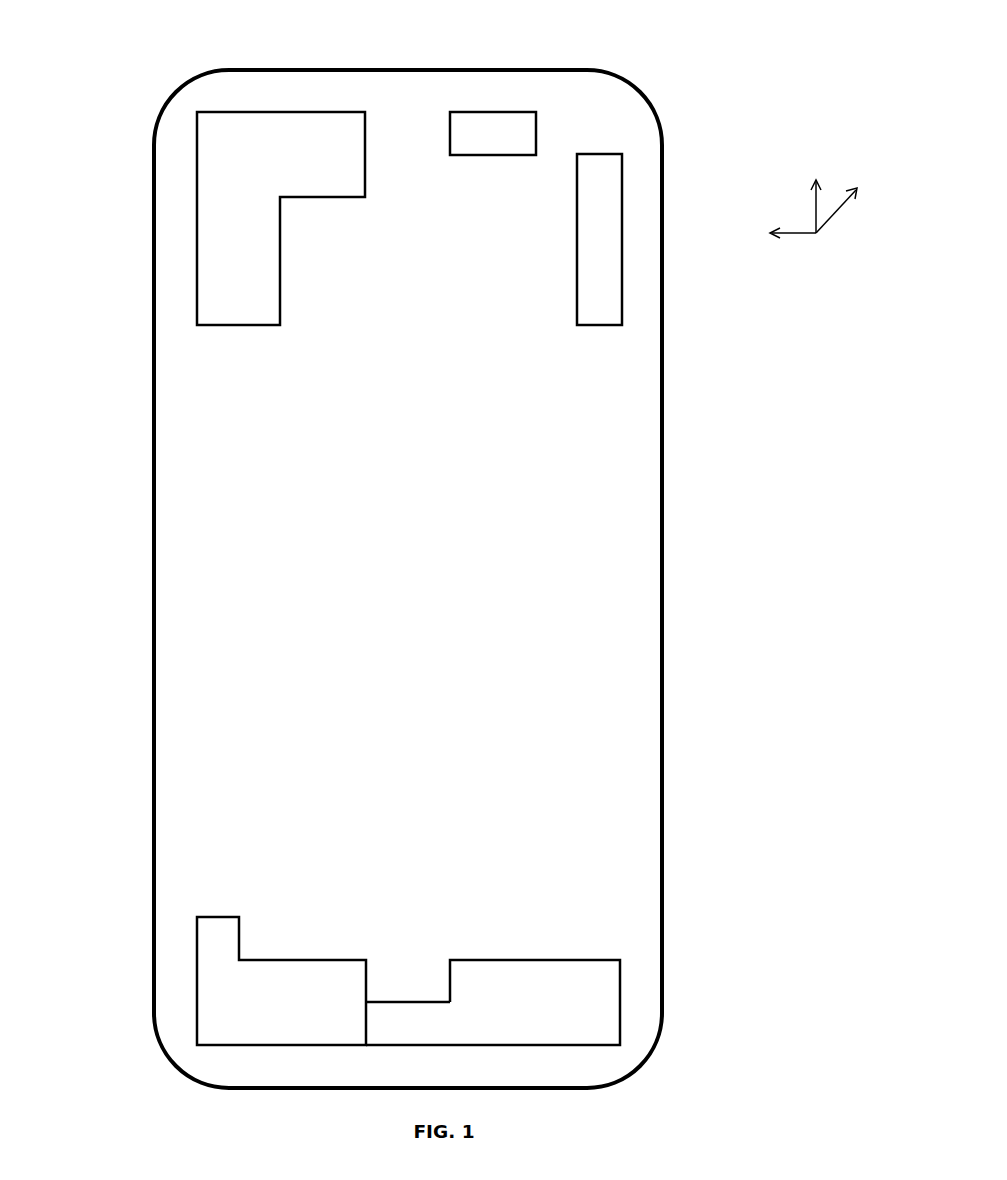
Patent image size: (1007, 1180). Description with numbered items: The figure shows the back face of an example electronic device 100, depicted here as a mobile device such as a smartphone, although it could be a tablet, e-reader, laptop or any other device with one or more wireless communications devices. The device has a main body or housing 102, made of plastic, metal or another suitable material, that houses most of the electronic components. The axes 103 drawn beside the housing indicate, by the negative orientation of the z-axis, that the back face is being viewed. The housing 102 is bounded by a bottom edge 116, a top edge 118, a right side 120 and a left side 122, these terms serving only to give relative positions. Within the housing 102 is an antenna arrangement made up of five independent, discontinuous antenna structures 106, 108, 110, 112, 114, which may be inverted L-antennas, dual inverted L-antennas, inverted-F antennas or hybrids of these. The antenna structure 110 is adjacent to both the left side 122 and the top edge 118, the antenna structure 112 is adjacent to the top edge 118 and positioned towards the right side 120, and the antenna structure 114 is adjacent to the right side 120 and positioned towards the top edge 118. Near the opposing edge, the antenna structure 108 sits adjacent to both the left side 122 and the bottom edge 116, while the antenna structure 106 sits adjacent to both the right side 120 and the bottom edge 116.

The electronic device 100 is at (493, 581).
The housing 102 is at (662, 440).
The axes 103 is at (833, 160).
The antenna structure 106 is at (620, 1003).
The antenna structure 108 is at (197, 1012).
The antenna structure 110 is at (192, 200).
The antenna structure 112 is at (515, 112).
The antenna structure 114 is at (620, 190).
The bottom edge 116 is at (573, 1090).
The top edge 118 is at (217, 70).
The right side 120 is at (662, 700).
The left side 122 is at (153, 700).